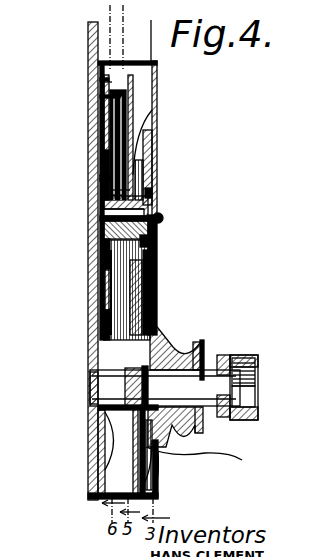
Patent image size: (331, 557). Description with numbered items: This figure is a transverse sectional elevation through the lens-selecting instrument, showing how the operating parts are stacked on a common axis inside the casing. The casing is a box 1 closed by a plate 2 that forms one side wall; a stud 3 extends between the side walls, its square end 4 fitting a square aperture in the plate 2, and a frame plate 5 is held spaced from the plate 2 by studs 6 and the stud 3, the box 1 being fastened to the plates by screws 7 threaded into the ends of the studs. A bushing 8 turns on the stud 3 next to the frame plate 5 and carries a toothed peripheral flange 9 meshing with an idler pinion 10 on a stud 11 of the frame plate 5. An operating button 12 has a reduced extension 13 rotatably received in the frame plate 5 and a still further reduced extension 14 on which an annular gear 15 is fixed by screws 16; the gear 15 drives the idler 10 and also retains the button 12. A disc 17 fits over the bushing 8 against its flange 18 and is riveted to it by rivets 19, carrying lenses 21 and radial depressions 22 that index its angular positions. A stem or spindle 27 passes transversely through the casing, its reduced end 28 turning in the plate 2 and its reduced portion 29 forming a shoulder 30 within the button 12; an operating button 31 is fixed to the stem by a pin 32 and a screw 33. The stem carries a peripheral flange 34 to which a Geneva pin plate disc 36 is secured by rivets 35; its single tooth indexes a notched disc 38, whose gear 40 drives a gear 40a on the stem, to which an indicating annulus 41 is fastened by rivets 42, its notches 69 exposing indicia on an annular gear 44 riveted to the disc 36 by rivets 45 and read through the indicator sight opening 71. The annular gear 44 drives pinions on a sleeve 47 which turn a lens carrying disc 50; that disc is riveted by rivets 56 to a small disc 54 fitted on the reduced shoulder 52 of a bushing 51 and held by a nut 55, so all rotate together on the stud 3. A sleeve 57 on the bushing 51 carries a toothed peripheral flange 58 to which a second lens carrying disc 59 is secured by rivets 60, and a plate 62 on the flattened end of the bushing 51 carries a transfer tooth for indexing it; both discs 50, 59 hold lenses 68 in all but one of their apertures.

The box 1 is at (157, 67).
The plate 2 is at (88, 33).
The stud 3 is at (56, 229).
The square end 4 is at (100, 213).
The frame plate 5 is at (157, 138).
The studs 6 is at (109, 35).
The screws 7 is at (163, 218).
The bushing 8 is at (152, 210).
The peripheral flange 9 is at (150, 177).
The idler pinion 10 is at (150, 270).
The stud 11 is at (150, 304).
The operating button 12 is at (204, 345).
The extension of reduced diameter 13 is at (178, 430).
The further reduced extension 14 is at (192, 422).
The annular gear 15 is at (150, 347).
The screws 16 is at (197, 345).
The disc 17 is at (126, 100).
The flange 18 is at (152, 155).
The rivets 19 is at (152, 194).
The lenses 21 is at (133, 92).
The radially extending grooves or depressions 22 is at (152, 113).
The stem or spindle 27 is at (98, 410).
The reduced end 28 is at (92, 388).
The reduced portion 29 is at (224, 368).
The shoulder 30 is at (222, 355).
The operating button 31 is at (248, 355).
The pin 32 is at (228, 415).
The screw 33 is at (255, 384).
The peripherally extending flange 34 is at (130, 407).
The rivets 35 is at (105, 440).
The disc 36 is at (105, 452).
The disc 38 is at (145, 284).
The gear 40 is at (150, 244).
The gear 40a is at (150, 490).
The annulus or disc 41 is at (158, 468).
The rivets 42 is at (205, 458).
The annular gear disc 44 is at (133, 470).
The rivets 45 is at (98, 465).
The sleeve 47 is at (92, 340).
The lens carrying disc 50 is at (104, 81).
The bushing or sleeve 51 is at (100, 204).
The reduced shoulder 52 is at (100, 230).
The small disc 54 is at (100, 247).
The nut 55 is at (104, 166).
The rivets 56 is at (100, 265).
The sleeve 57 is at (100, 195).
The peripheral flange 58 is at (79, 292).
The lens carrying disc 59 is at (104, 78).
The rivets 60 is at (100, 178).
The plate 62 is at (100, 190).
The lenses 68 is at (108, 96).
The notches 69 is at (158, 490).
The indicator sight opening 71 is at (158, 478).